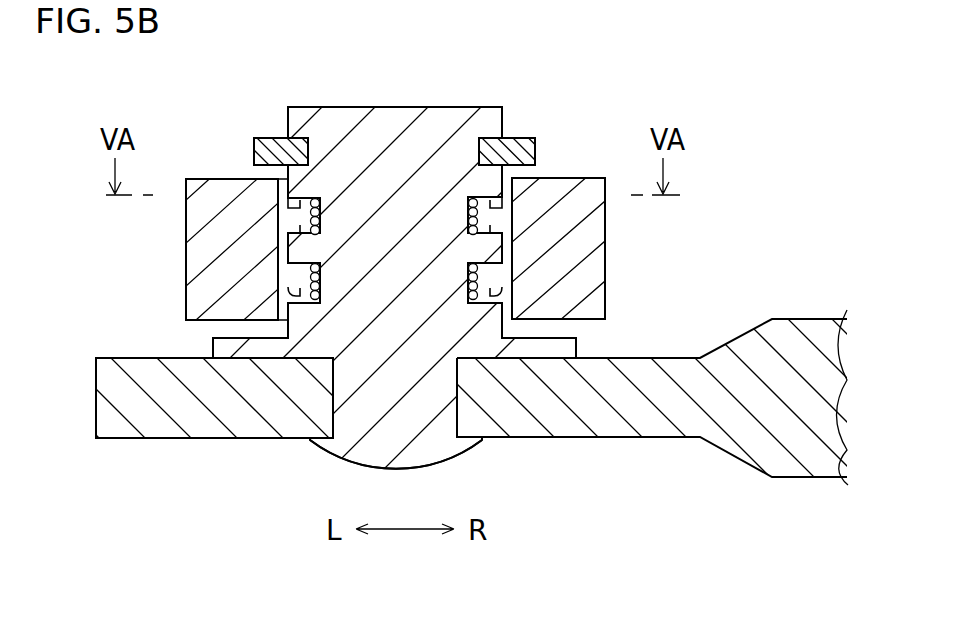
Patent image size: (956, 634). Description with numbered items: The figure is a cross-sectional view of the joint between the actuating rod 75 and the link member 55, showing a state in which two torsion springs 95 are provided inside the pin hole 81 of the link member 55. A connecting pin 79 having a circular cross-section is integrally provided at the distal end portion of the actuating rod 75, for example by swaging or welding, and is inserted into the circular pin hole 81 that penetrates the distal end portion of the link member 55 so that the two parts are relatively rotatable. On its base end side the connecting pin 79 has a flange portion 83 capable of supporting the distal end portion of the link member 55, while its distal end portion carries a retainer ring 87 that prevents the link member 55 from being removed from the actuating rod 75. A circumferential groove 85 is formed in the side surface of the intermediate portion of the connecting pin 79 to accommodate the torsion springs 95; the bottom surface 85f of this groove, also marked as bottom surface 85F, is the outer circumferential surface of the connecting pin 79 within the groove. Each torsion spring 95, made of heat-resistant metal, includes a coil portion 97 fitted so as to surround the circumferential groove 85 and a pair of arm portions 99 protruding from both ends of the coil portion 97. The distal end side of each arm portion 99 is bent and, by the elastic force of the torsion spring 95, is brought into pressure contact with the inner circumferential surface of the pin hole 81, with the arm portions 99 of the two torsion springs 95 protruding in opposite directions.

The link member 55 is at (190, 226).
The actuating rod 75 is at (788, 326).
The connecting pin 79 is at (396, 112).
The pin hole 81 is at (285, 264).
The flange portion 83 is at (582, 346).
The circumferential groove 85 is at (312, 202).
The bottom surface 85f is at (482, 212).
The bottom surface 85F is at (338, 338).
The retainer ring 87 is at (518, 140).
The torsion spring 95 is at (488, 220).
The coil portion 97 is at (320, 208).
The arm portion 99 is at (310, 230).